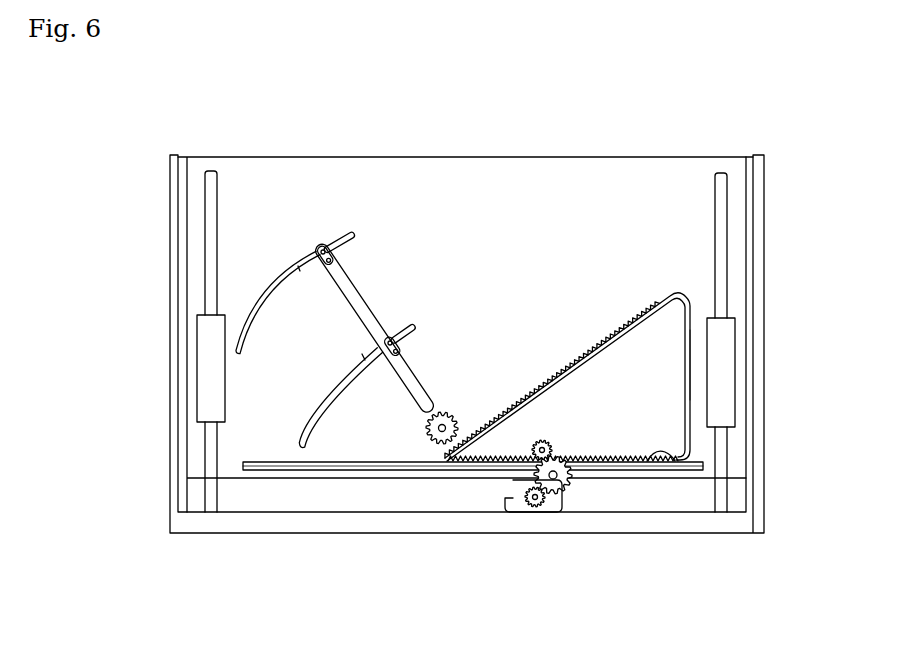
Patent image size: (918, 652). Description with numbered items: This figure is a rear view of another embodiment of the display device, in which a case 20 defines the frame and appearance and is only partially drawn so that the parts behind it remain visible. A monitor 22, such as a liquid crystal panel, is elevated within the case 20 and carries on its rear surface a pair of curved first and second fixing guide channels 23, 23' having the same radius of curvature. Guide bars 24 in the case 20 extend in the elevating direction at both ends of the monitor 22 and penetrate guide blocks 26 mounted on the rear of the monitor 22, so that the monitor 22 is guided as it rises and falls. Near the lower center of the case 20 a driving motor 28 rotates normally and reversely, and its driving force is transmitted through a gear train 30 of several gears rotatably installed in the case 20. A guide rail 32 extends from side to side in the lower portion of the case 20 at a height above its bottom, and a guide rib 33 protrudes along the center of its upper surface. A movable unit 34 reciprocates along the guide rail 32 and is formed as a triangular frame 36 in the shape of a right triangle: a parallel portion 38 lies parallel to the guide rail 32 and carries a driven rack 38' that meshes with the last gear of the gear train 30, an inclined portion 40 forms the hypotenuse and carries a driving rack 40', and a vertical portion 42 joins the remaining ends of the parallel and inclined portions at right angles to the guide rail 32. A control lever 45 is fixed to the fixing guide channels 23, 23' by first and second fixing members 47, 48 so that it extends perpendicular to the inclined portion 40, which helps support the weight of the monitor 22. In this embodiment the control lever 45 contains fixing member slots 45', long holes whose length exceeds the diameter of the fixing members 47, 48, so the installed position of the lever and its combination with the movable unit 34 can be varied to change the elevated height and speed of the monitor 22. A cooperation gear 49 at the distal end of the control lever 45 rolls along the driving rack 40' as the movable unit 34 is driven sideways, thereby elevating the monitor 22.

The case 20 is at (757, 505).
The monitor 22 is at (500, 157).
The first fixing guide channel 23 is at (335, 398).
The second fixing guide channel 23' is at (278, 222).
The guide bar 24 is at (208, 228).
The guide block 26 is at (200, 392).
The driving motor 28 is at (513, 498).
The gear train 30 is at (553, 490).
The guide rail 32 is at (259, 468).
The guide rib 33 is at (272, 460).
The movable unit 34 is at (663, 275).
The triangular frame 36 is at (705, 445).
The parallel portion 38 is at (588, 511).
The driven rack 38' is at (699, 513).
The inclined portion 40 is at (572, 455).
The driving rack 40' is at (552, 284).
The vertical portion 42 is at (687, 363).
The control lever 45 is at (368, 432).
The fixing member slot 45' is at (393, 221).
The first fixing member 47 is at (391, 340).
The second fixing member 48 is at (326, 248).
The cooperation gear 49 is at (430, 438).